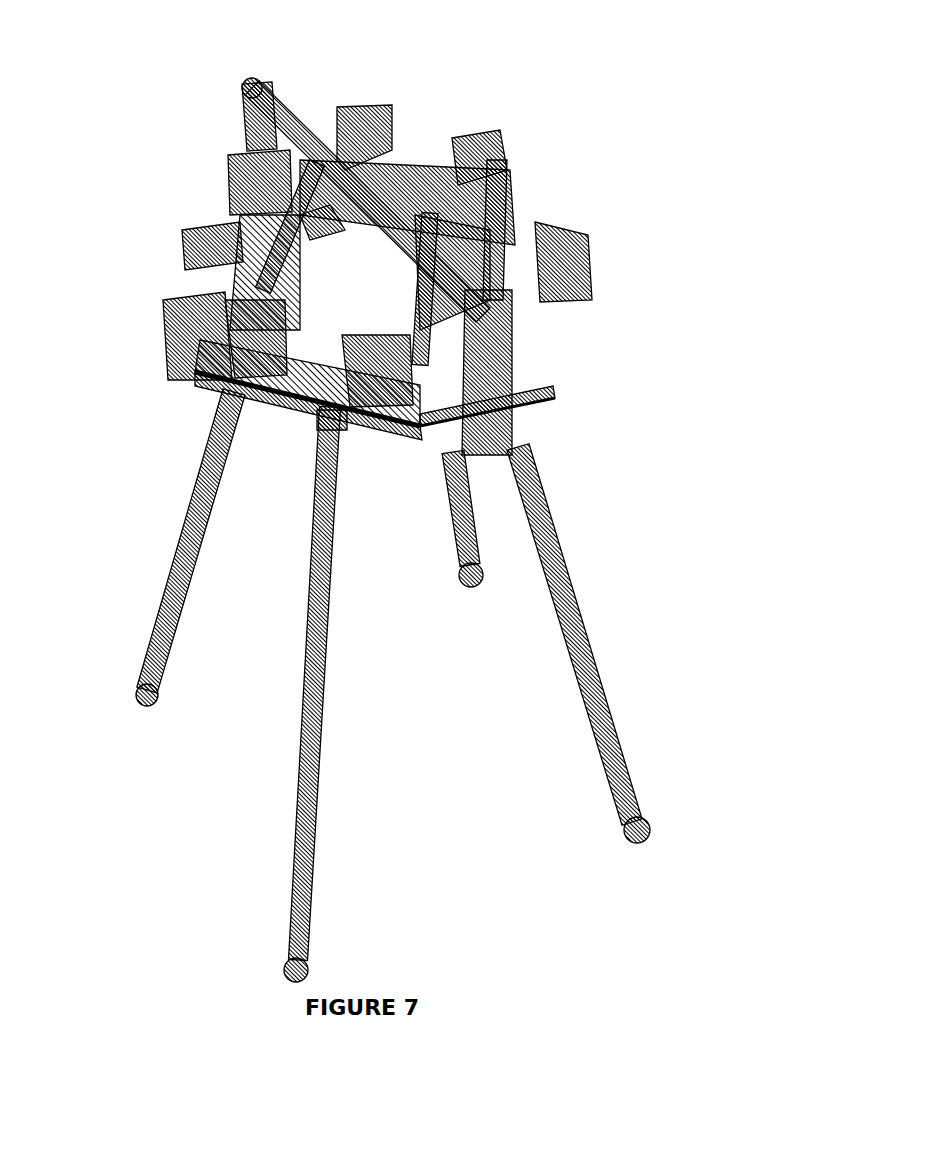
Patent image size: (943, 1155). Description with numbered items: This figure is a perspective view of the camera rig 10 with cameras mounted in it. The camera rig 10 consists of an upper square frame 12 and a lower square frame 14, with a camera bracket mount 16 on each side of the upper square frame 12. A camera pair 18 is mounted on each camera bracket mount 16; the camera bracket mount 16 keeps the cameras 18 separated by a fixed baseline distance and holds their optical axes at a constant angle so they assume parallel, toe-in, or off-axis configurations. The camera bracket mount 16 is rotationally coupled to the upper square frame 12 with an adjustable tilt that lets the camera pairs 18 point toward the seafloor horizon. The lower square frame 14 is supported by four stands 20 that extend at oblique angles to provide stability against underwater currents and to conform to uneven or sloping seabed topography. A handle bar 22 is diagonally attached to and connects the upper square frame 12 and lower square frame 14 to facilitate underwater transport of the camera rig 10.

The camera rig 10 is at (436, 516).
The upper square frame 12 is at (430, 398).
The lower square frame 14 is at (487, 455).
The camera bracket mount 16 is at (307, 380).
The camera pair 18 is at (370, 117).
The stands 20 is at (563, 587).
The handle bar 22 is at (245, 90).